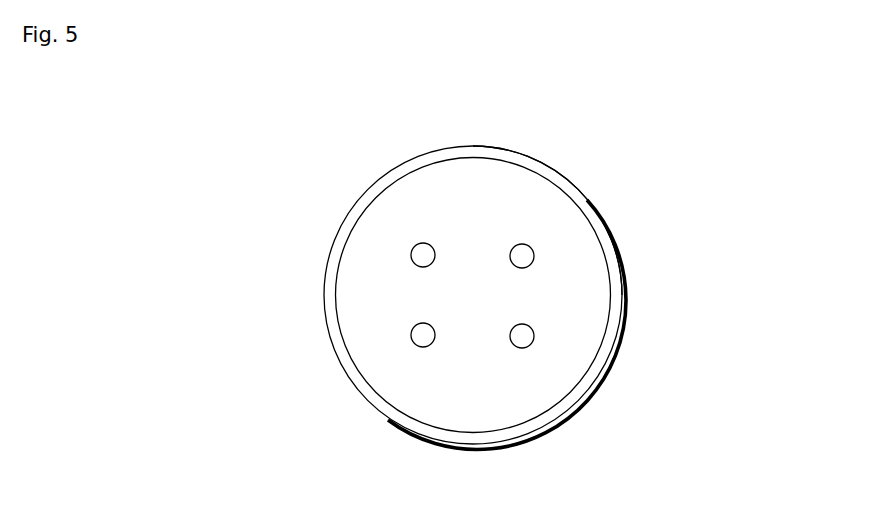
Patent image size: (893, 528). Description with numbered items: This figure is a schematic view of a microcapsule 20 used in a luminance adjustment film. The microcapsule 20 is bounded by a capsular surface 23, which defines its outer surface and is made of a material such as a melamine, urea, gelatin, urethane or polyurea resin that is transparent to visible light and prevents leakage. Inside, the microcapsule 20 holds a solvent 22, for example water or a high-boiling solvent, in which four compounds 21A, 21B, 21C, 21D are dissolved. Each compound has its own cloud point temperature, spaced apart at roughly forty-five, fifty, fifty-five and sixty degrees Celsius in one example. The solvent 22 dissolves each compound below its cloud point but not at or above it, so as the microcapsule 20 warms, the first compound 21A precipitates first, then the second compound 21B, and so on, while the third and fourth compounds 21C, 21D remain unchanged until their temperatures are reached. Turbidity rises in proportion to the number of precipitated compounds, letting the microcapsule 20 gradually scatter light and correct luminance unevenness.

The microcapsule 20 is at (292, 218).
The first compound 21A is at (424, 243).
The second compound 21B is at (420, 347).
The third compound 21C is at (527, 245).
The fourth compound 21D is at (523, 348).
The solvent 22 is at (578, 308).
The capsular surface 23 is at (622, 270).